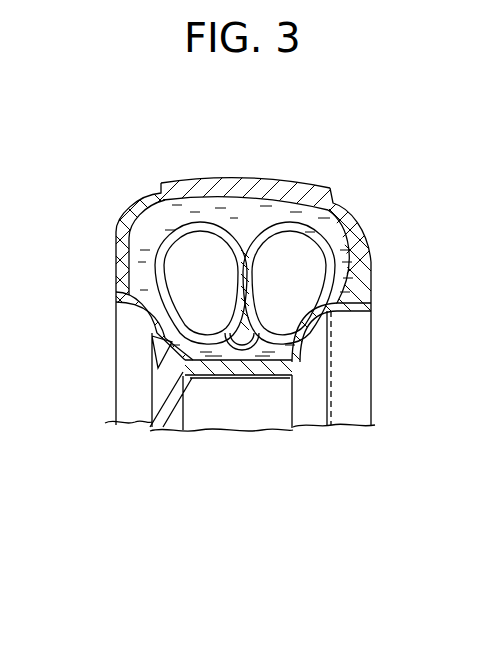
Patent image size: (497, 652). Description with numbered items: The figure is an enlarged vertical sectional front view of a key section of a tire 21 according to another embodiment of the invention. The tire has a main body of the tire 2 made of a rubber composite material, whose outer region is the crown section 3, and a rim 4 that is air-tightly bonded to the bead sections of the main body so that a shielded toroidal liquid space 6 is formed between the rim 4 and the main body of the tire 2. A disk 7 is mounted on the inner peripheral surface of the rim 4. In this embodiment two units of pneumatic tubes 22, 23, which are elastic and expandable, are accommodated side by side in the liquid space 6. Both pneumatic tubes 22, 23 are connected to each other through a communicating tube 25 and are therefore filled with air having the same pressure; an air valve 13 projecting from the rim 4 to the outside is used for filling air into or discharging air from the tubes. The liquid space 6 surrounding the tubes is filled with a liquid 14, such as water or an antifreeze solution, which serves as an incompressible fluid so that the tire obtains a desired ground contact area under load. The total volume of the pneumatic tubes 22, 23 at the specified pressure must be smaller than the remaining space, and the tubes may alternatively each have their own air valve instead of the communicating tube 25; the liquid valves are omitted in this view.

The main body of the tire 2 is at (140, 203).
The crown section 3 is at (193, 181).
The rim 4 is at (143, 315).
The liquid space 6 is at (128, 255).
The disk 7 is at (168, 396).
The air valve 13 is at (151, 366).
The liquid 14 is at (245, 213).
The tire 21 is at (103, 275).
The pneumatic tube 22 is at (131, 223).
The pneumatic tube 23 is at (342, 223).
The communicating tube 25 is at (264, 378).